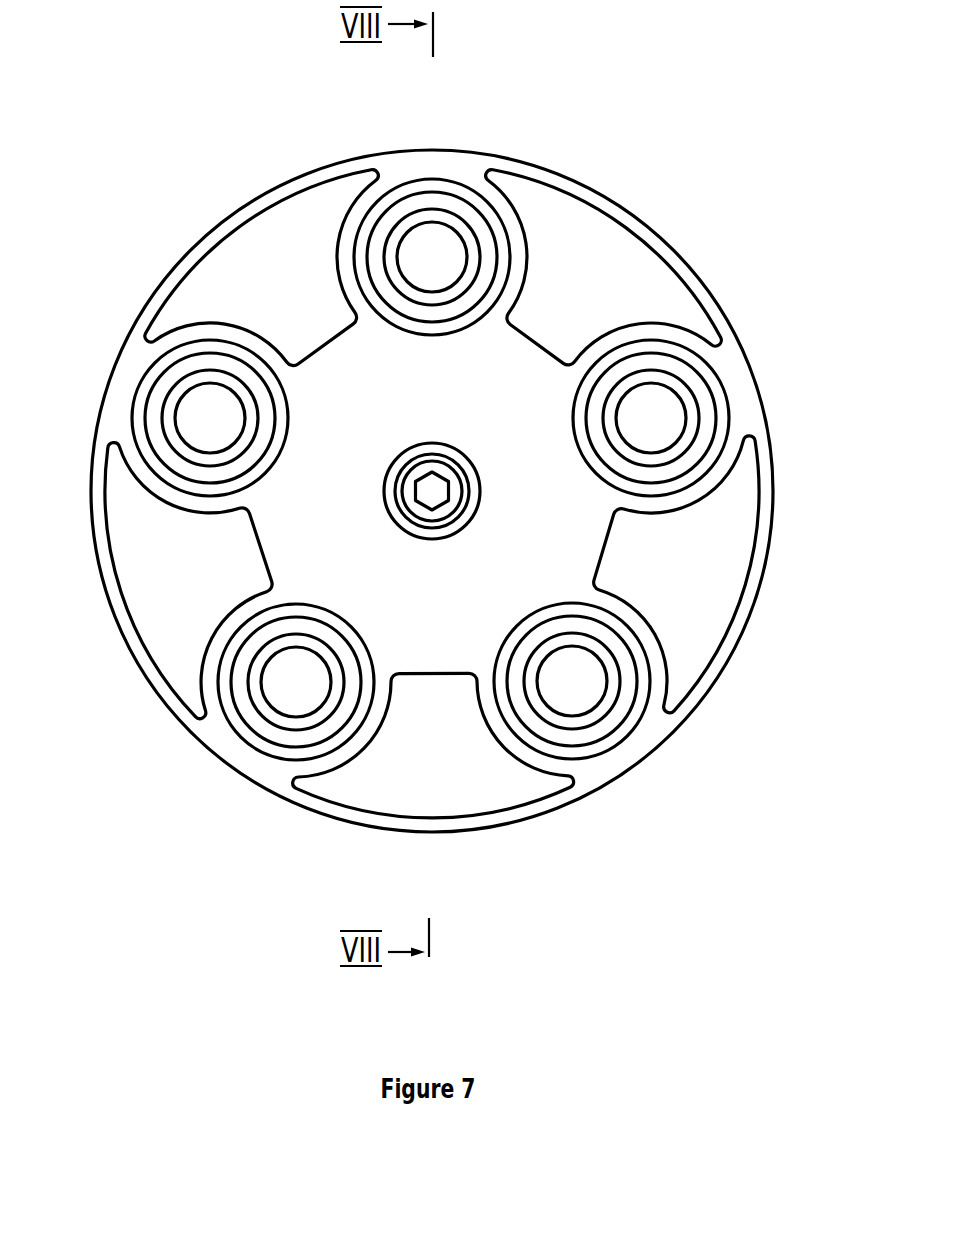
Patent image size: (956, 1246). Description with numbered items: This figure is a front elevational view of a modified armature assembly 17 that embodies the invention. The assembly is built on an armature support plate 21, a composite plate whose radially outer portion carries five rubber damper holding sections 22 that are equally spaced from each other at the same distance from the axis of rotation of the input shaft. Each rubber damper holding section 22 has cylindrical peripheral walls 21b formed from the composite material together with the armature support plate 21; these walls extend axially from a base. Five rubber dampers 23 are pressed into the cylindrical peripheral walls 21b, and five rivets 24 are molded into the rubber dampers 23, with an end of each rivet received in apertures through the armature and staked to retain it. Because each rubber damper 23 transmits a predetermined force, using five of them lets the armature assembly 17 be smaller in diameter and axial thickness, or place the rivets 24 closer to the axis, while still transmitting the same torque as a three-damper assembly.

The armature assembly 17 is at (697, 227).
The armature support plate 21 is at (563, 166).
The cylindrical peripheral walls 21b is at (523, 247).
The rubber damper holding sections 22 is at (429, 170).
The rubber dampers 23 is at (462, 214).
The rivets 24 is at (413, 248).